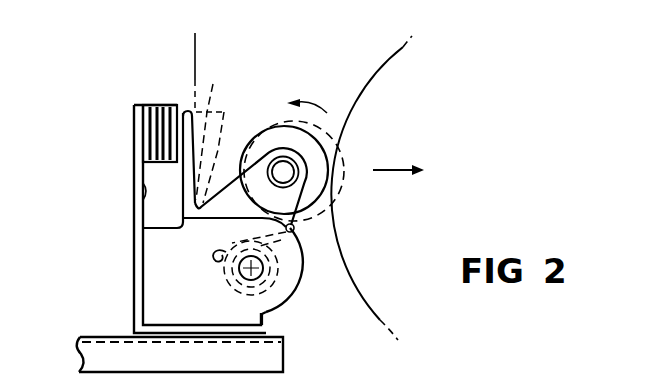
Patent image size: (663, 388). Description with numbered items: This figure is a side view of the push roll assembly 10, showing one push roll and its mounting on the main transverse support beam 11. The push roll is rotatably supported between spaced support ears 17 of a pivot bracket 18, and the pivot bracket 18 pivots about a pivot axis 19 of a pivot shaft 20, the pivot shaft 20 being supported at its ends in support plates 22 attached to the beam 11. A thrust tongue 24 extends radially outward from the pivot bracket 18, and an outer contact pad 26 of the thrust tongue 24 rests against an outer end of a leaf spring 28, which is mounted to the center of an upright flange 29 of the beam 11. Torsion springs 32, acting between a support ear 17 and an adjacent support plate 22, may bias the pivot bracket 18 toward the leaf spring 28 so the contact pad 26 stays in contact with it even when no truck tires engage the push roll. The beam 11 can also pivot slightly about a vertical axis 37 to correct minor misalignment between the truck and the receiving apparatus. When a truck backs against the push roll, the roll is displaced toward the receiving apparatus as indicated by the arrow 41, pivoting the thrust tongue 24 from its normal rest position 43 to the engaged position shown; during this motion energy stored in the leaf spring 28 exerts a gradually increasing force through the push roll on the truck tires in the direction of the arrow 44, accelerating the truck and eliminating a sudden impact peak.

The push roll assembly 10 is at (243, 97).
The main transverse support beam 11 is at (134, 251).
The support ears 17 is at (247, 172).
The pivot bracket 18 is at (293, 261).
The pivot axis 19 is at (258, 274).
The pivot shaft 20 is at (256, 285).
The support plates 22 is at (150, 284).
The thrust tongue 24 is at (188, 110).
The outer contact pad 26 is at (173, 123).
The leaf spring 28 is at (150, 132).
The upright flange 29 is at (141, 198).
The torsion springs 32 is at (289, 302).
The vertical axis 37 is at (196, 48).
The arrow 41 is at (310, 105).
The normal rest position 43 is at (213, 88).
The arrow 44 is at (388, 168).